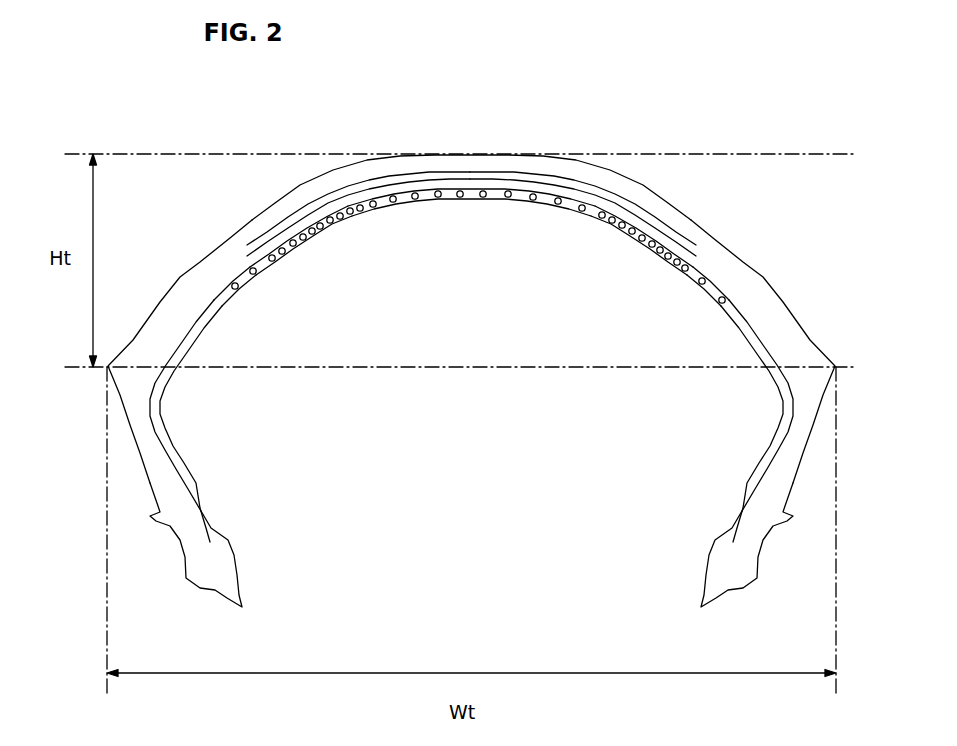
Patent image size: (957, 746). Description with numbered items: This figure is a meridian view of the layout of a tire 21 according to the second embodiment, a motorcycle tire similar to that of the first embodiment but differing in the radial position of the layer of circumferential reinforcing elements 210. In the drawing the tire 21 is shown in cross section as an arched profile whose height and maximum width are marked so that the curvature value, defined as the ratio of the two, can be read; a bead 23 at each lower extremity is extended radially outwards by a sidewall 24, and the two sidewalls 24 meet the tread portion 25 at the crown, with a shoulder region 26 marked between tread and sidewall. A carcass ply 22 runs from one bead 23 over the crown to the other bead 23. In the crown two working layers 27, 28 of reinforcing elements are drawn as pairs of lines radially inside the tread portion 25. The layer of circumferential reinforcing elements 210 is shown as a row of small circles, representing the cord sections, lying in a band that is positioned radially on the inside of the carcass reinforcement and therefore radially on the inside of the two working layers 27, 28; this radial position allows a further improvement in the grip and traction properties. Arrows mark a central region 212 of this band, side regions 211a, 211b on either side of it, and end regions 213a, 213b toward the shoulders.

The tire 21 is at (583, 120).
The carcass ply 22 is at (187, 505).
The bead portion 23 is at (223, 570).
The sidewall portion 24 is at (128, 422).
The tread portion 25 is at (346, 150).
The shoulder portion 26 is at (741, 278).
The working layer 27 is at (264, 236).
The working layer 28 is at (683, 239).
The layer of circumferential reinforcing elements 210 is at (232, 283).
The ply side region 211a is at (320, 254).
The ply side region 211b is at (621, 251).
The ply central region 212 is at (448, 219).
The ply end region 213a is at (259, 307).
The ply end region 213b is at (685, 301).